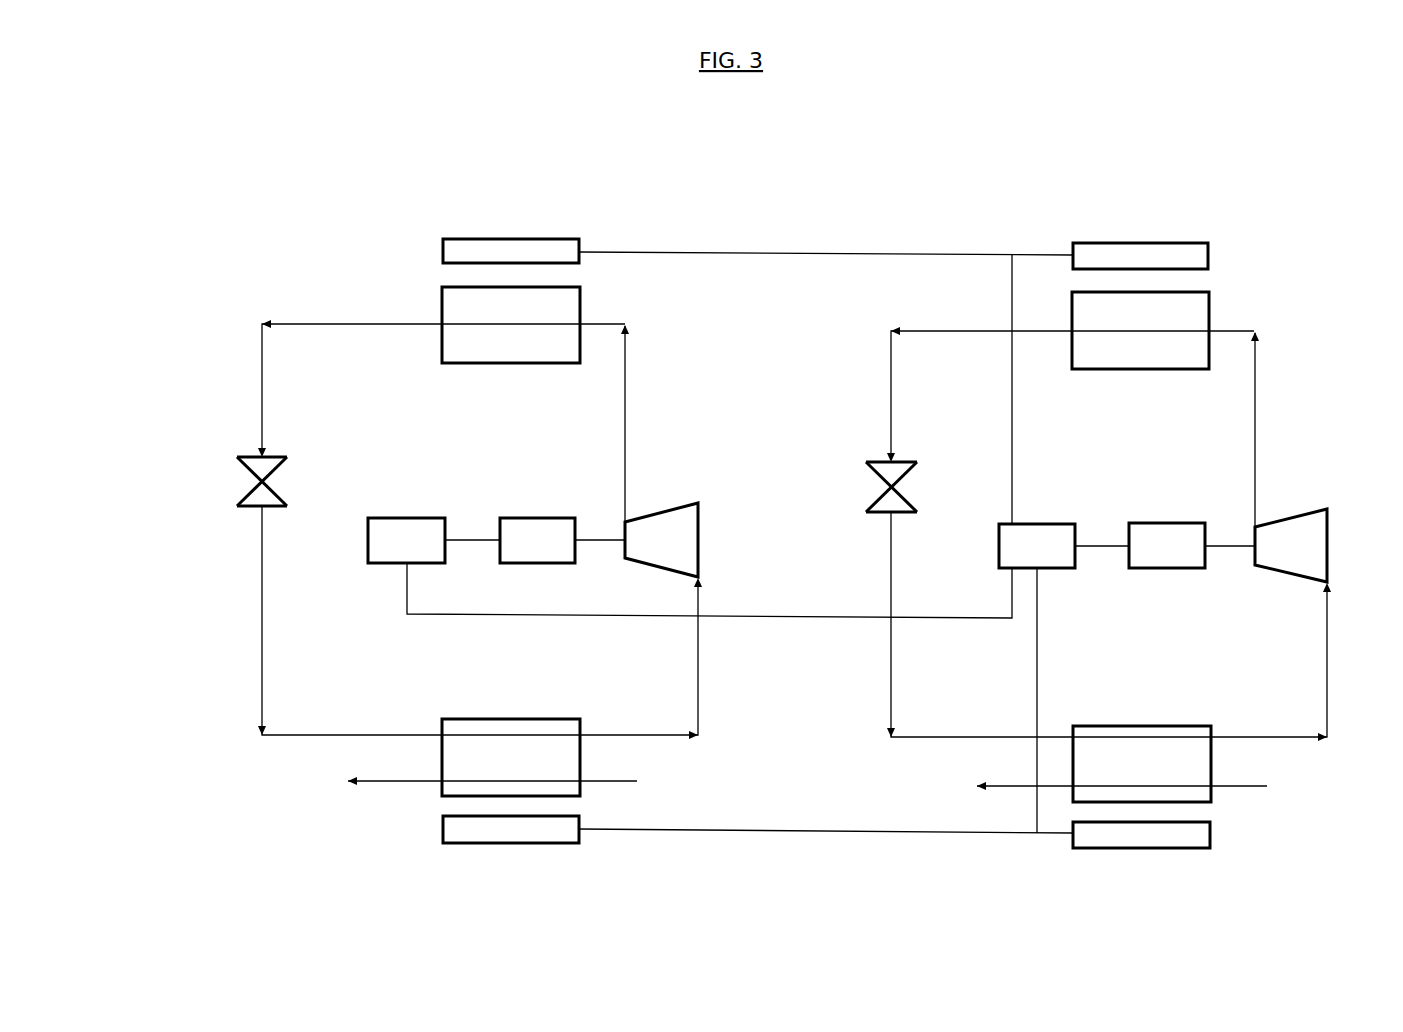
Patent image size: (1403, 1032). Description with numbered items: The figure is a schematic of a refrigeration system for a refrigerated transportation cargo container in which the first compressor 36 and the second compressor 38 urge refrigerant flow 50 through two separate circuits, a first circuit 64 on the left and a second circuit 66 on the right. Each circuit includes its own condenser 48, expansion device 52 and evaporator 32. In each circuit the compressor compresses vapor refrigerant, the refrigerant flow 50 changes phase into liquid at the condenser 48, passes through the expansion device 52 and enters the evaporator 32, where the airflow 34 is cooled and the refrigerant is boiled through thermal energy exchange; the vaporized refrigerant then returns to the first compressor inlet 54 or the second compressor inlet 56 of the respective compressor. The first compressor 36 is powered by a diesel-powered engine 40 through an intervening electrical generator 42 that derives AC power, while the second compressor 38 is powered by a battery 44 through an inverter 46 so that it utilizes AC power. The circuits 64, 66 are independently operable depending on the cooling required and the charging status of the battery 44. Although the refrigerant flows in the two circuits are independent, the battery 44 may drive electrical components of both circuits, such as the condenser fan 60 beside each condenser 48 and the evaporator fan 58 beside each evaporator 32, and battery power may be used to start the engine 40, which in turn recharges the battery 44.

The evaporator 32 is at (445, 720).
The airflow 34 is at (403, 782).
The first compressor 36 is at (662, 540).
The second compressor 38 is at (1312, 538).
The engine 40 is at (405, 530).
The electrical generator 42 is at (533, 530).
The battery 44 is at (1048, 533).
The inverter 46 is at (1165, 542).
The condenser 48 is at (441, 307).
The refrigerant flow 50 is at (345, 324).
The expansion device 52 is at (235, 475).
The first compressor inlet 54 is at (700, 573).
The second compressor inlet 56 is at (1330, 583).
The evaporator fan 58 is at (465, 843).
The condenser fan 60 is at (500, 238).
The first circuit 64 is at (318, 163).
The second circuit 66 is at (931, 198).